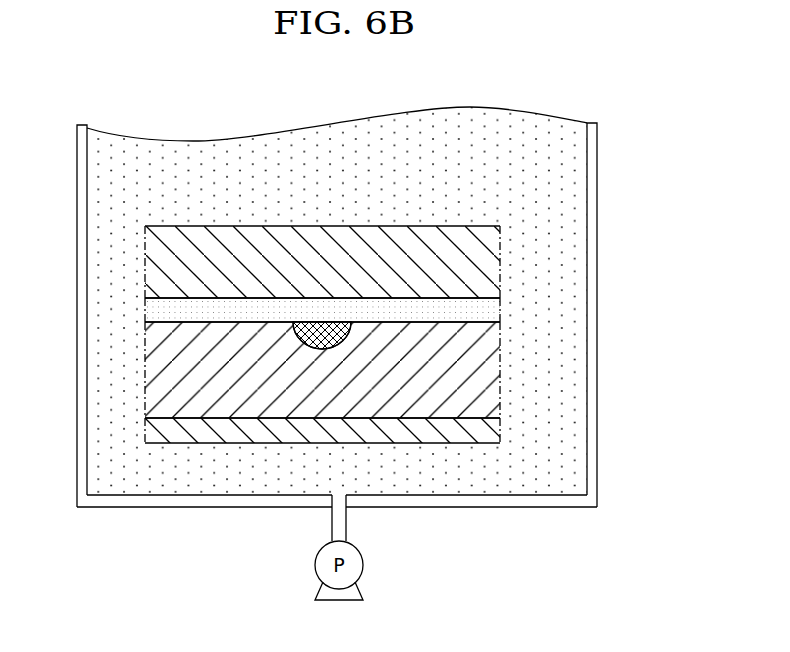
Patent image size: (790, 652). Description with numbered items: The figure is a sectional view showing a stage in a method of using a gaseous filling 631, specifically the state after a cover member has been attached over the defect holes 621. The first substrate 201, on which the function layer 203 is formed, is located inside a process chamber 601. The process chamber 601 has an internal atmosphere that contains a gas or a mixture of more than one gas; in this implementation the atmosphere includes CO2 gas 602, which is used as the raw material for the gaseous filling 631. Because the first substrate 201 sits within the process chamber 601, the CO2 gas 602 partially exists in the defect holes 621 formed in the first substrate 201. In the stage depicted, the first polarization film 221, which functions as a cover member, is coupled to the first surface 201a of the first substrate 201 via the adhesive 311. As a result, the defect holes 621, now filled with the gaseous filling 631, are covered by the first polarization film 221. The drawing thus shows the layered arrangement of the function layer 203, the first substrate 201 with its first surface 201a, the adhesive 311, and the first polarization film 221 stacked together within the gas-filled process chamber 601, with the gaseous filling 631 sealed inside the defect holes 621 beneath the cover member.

The process chamber 601 is at (590, 300).
The CO2 gas 602 is at (362, 196).
The first polarization film 221 is at (498, 264).
The adhesive 311 is at (492, 311).
The first surface 201a is at (490, 331).
The first substrate 201 is at (488, 379).
The function layer 203 is at (490, 433).
The defect holes 621 is at (351, 335).
The gaseous filling 631 is at (323, 349).